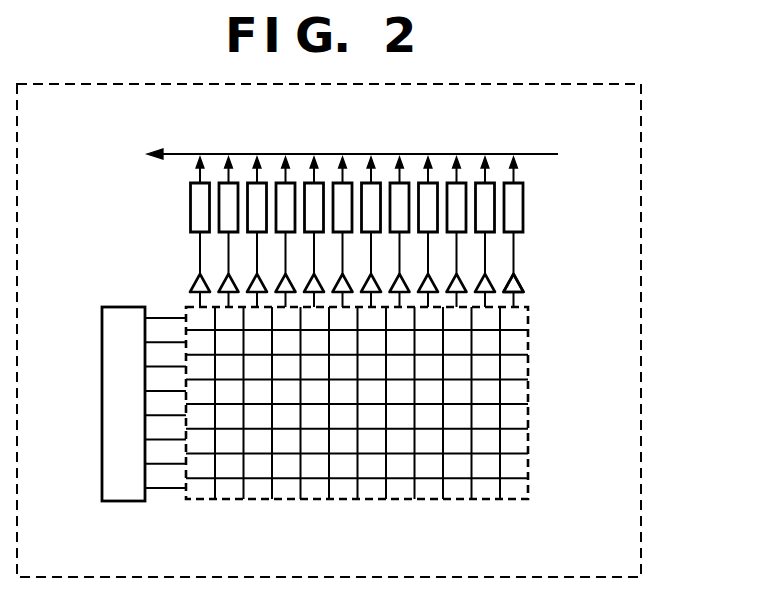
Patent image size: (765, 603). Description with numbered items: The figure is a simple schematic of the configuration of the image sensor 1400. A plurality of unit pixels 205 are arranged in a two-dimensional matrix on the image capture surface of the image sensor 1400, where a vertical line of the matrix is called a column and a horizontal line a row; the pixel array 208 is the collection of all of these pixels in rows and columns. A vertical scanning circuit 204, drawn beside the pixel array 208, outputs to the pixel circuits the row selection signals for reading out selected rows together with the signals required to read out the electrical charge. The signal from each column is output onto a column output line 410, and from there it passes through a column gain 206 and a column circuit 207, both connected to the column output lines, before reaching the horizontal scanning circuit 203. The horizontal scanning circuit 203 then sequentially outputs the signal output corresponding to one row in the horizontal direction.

The horizontal scanning circuit 203 is at (187, 155).
The vertical scanning circuit 204 is at (102, 317).
The unit pixel 205 is at (200, 500).
The column gain 206 is at (191, 283).
The column circuit 207 is at (190, 216).
The pixel array 208 is at (528, 385).
The column output line 410 is at (516, 294).
The image sensor 1400 is at (641, 388).